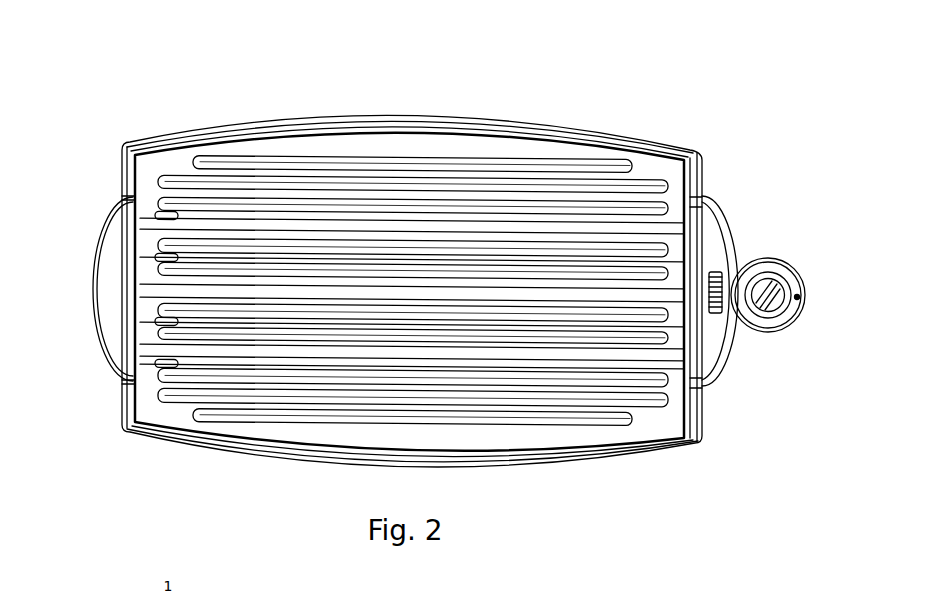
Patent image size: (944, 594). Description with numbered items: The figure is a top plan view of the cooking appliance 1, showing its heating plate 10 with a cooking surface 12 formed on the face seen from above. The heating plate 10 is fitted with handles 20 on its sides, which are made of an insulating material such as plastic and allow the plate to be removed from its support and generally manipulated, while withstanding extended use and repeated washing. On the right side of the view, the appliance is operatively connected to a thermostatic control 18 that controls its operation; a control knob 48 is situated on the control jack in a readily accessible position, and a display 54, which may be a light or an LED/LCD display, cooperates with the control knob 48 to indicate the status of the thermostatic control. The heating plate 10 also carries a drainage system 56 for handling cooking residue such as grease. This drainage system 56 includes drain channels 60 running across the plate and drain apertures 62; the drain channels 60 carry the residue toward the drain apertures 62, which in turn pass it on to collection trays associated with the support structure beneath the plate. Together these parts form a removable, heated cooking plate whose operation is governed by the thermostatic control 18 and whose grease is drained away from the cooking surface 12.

The cooking appliance 1 is at (558, 87).
The heating plate 10 is at (398, 148).
The cooking surface 12 is at (641, 168).
The thermostatic control 18 is at (752, 258).
The handle 20 is at (725, 237).
The control knob 48 is at (769, 291).
The display 54 is at (783, 309).
The drainage system 56 is at (470, 428).
The drain channel 60 is at (129, 143).
The drain aperture 62 is at (155, 363).